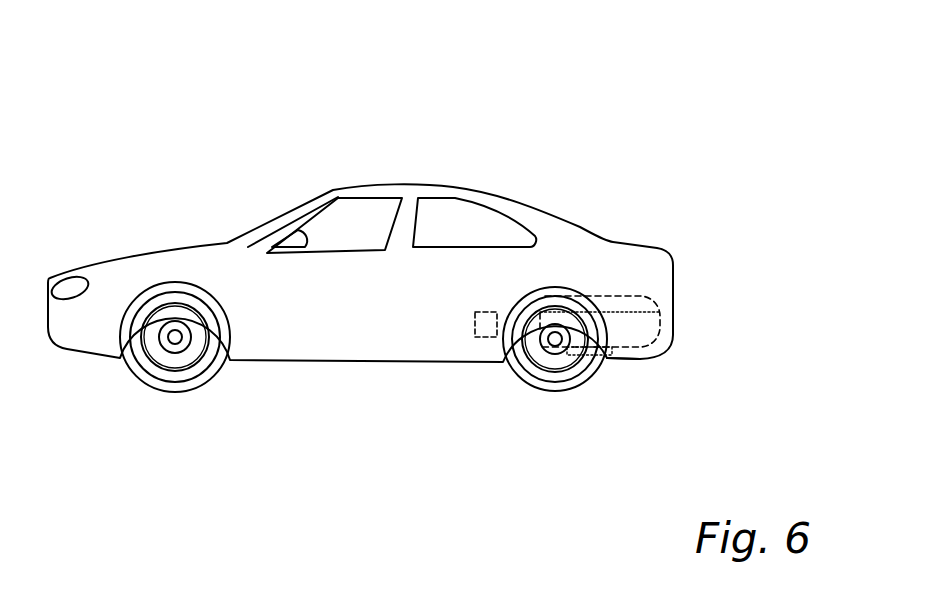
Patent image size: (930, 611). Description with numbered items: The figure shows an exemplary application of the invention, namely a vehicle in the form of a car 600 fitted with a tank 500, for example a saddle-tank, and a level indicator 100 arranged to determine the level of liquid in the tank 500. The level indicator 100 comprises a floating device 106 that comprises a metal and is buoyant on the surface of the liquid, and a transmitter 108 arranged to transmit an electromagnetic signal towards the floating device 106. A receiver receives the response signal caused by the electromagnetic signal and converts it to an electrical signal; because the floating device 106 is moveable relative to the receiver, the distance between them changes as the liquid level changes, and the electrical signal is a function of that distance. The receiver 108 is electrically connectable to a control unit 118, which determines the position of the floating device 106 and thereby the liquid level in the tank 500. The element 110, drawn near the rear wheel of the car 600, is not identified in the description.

The car 600 is at (603, 180).
The tank 500 is at (663, 320).
The floating device 106 is at (632, 313).
The transmitter 108 is at (608, 358).
The wheel 110 is at (583, 360).
The control unit 118 is at (487, 335).
The level indicator 100 is at (597, 370).